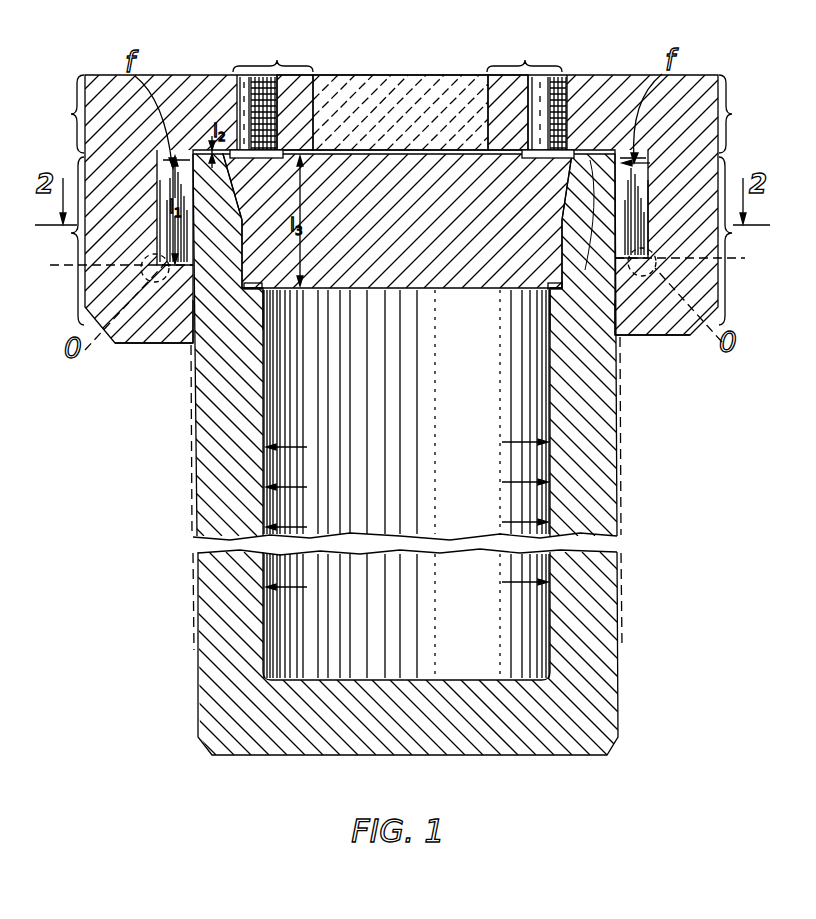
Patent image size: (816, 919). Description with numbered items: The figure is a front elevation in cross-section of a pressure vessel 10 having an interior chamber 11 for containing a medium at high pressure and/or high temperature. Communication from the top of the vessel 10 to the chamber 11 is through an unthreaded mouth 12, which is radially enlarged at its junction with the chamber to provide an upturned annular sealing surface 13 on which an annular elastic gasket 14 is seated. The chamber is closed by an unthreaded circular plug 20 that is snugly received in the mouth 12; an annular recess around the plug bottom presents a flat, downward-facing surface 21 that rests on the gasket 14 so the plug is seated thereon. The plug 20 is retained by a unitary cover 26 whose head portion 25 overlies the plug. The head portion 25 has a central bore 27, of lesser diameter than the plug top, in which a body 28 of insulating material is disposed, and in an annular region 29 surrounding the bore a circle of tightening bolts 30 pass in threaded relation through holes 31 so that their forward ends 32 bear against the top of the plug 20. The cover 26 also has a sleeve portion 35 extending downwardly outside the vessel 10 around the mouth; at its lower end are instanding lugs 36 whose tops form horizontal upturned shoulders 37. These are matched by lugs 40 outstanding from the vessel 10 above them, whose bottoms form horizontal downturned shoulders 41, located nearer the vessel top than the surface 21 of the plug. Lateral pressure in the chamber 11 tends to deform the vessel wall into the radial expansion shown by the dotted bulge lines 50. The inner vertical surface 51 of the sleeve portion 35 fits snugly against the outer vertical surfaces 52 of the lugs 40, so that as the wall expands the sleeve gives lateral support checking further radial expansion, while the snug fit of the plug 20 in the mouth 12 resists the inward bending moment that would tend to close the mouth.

The pressure vessel 10 is at (430, 755).
The interior chamber 11 is at (402, 437).
The unthreaded mouth 12 is at (584, 265).
The annular sealing surface 13 is at (256, 292).
The annular elastic gasket 14 is at (245, 289).
The circular plug 20 is at (387, 232).
The downward-facing surface 21 is at (254, 289).
The head portion 25 is at (402, 209).
The unitary cover 26 is at (636, 72).
The central bore 27 is at (316, 95).
The body of insulating material 28 is at (386, 95).
The annular region 29 is at (397, 48).
The tightening bolts 30 is at (243, 128).
The holes 31 is at (233, 120).
The forward ends 32 is at (265, 158).
The sleeve portion 35 is at (402, 241).
The instanding lugs 36 is at (176, 318).
The upturned shoulder 37 is at (165, 315).
The outstanding lugs 40 is at (160, 178).
The downturned shoulder 41 is at (172, 262).
The dotted bulge lines 50 is at (190, 488).
The inner vertical surface 51 is at (163, 190).
The outer vertical surfaces 52 is at (160, 232).